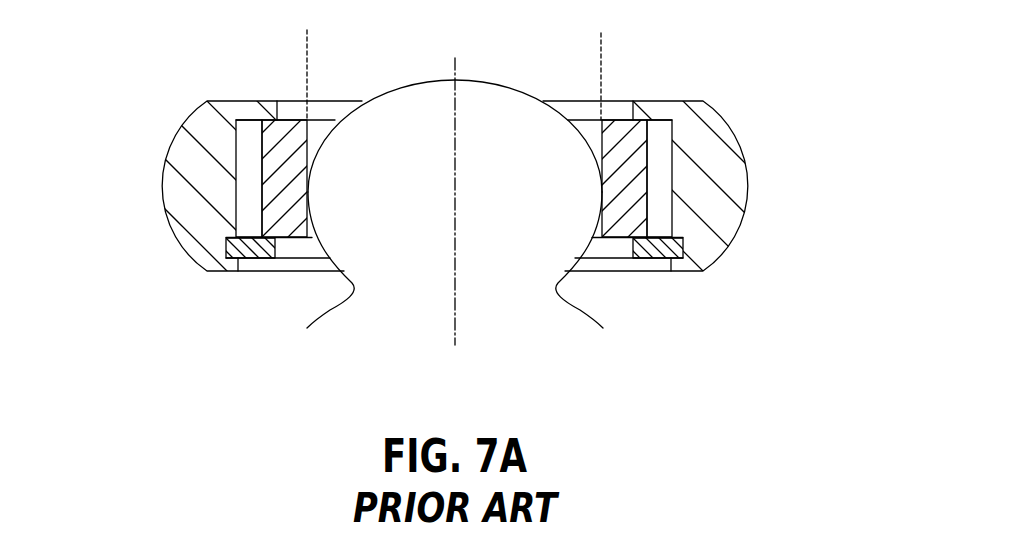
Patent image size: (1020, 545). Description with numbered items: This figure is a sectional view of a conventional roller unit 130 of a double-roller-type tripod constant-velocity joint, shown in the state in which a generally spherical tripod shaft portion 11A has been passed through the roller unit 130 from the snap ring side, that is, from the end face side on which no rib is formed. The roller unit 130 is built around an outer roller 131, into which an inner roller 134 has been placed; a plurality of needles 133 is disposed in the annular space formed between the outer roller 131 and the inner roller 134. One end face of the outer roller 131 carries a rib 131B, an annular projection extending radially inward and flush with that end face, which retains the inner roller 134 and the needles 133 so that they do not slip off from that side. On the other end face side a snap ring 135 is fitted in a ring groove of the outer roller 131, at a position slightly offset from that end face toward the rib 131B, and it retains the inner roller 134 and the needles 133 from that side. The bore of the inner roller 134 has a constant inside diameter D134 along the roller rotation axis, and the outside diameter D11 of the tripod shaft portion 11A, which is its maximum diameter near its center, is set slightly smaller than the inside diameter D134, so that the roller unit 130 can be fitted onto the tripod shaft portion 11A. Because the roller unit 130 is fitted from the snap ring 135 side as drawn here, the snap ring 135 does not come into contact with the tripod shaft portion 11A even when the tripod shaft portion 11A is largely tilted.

The roller unit 130 is at (188, 86).
The outer roller 131 is at (210, 191).
The rib 131B is at (246, 108).
The needles 133 is at (248, 222).
The inner roller 134 is at (287, 168).
The snap ring 135 is at (263, 258).
The tripod shaft portion 11A is at (507, 300).
The inside diameter of the inner roller D134 is at (601, 40).
The outside diameter of the tripod shaft portion D11 is at (602, 192).